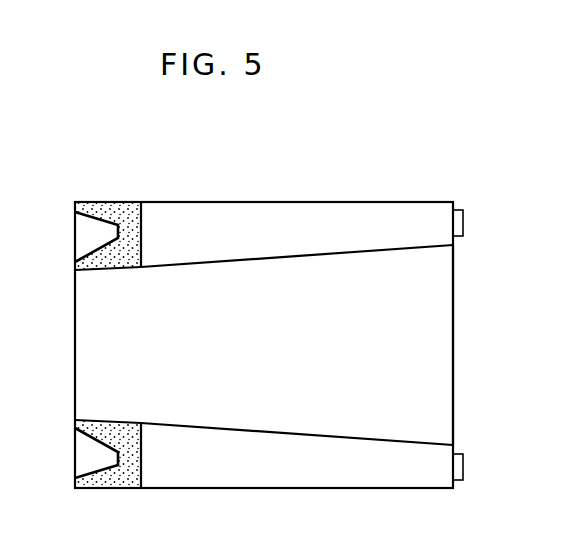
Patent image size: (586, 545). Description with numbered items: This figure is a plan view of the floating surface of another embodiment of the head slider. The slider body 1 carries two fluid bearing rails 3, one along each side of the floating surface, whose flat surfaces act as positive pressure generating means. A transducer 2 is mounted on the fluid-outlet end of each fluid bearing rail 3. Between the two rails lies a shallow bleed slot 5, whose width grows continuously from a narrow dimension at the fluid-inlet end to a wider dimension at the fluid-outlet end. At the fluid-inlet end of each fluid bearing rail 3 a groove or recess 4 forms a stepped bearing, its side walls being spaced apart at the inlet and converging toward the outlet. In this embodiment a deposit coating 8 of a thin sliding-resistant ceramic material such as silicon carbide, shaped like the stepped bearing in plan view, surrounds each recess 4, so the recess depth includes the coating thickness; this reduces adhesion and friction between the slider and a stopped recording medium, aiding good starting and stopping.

The slider body 1 is at (285, 200).
The transducer 2 is at (463, 225).
The fluid bearing rail 3 is at (350, 214).
The recess 4 is at (87, 237).
The bleed slot 5 is at (437, 350).
The deposit coating 8 is at (110, 215).